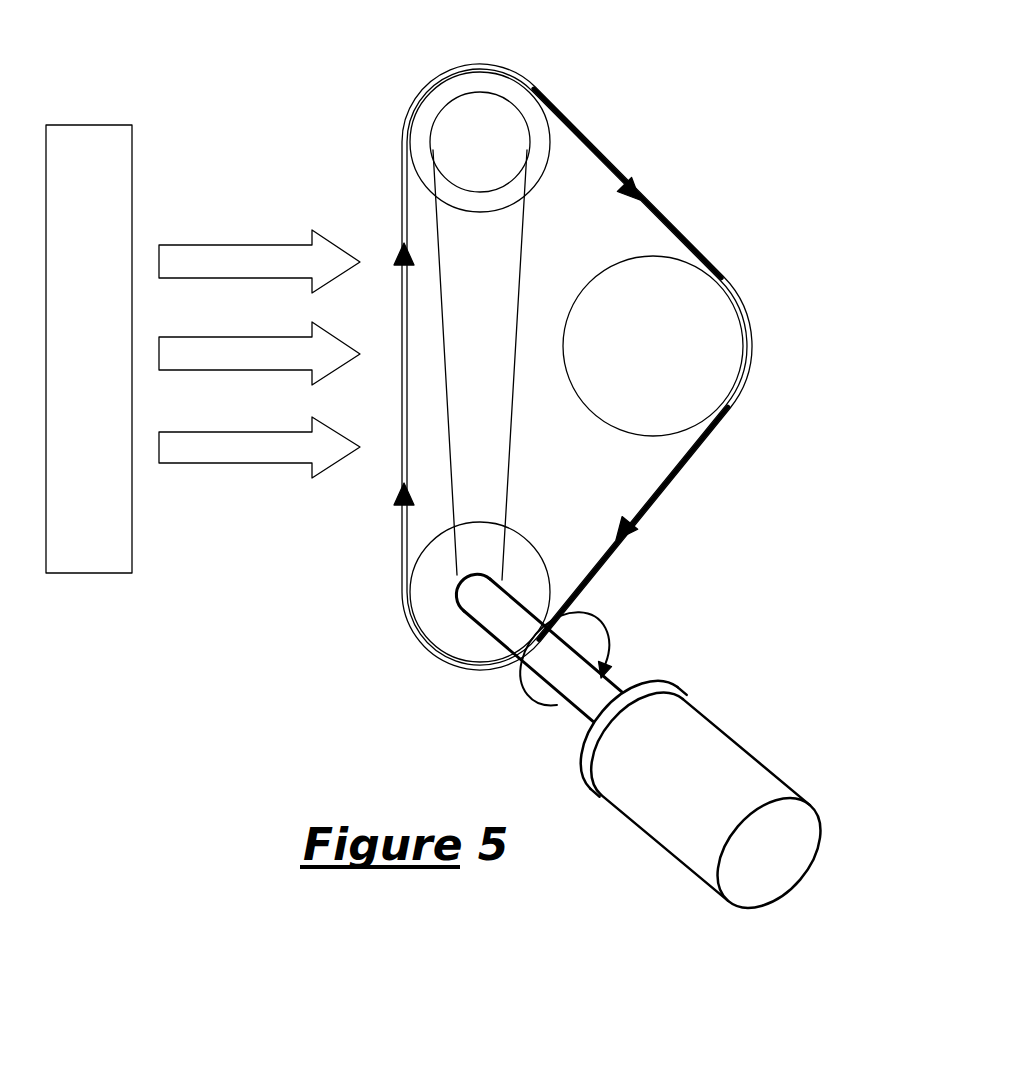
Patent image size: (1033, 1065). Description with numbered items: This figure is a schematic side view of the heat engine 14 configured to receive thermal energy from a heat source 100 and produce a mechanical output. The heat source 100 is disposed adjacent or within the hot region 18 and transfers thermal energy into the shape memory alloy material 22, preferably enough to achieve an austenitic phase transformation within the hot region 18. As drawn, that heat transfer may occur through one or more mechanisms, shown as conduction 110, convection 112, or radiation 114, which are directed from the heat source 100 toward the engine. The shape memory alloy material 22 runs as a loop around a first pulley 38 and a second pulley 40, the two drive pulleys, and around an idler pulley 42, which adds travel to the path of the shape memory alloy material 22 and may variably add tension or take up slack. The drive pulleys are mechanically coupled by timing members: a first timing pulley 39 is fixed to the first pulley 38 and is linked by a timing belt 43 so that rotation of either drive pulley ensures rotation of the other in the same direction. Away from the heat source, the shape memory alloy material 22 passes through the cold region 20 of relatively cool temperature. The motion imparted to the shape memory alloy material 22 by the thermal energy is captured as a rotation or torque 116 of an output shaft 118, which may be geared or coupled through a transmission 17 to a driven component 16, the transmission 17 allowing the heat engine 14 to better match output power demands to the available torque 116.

The heat engine 14 is at (300, 677).
The driven component 16 is at (753, 753).
The coupling device 17 is at (662, 698).
The hot region 18 is at (353, 548).
The cold region 20 is at (733, 120).
The shape memory alloy material 22 is at (618, 140).
The first pulley 38 is at (545, 345).
The first timing pulley 39 is at (510, 107).
The second pulley 40 is at (523, 535).
The idler pulley 42 is at (662, 255).
The timing belt 43 is at (522, 290).
The heat source 100 is at (89, 349).
The conduction 110 is at (259, 261).
The convection 112 is at (259, 353).
The radiation 114 is at (259, 447).
The rotation/torque 116 is at (620, 633).
The output shaft 118 is at (518, 657).